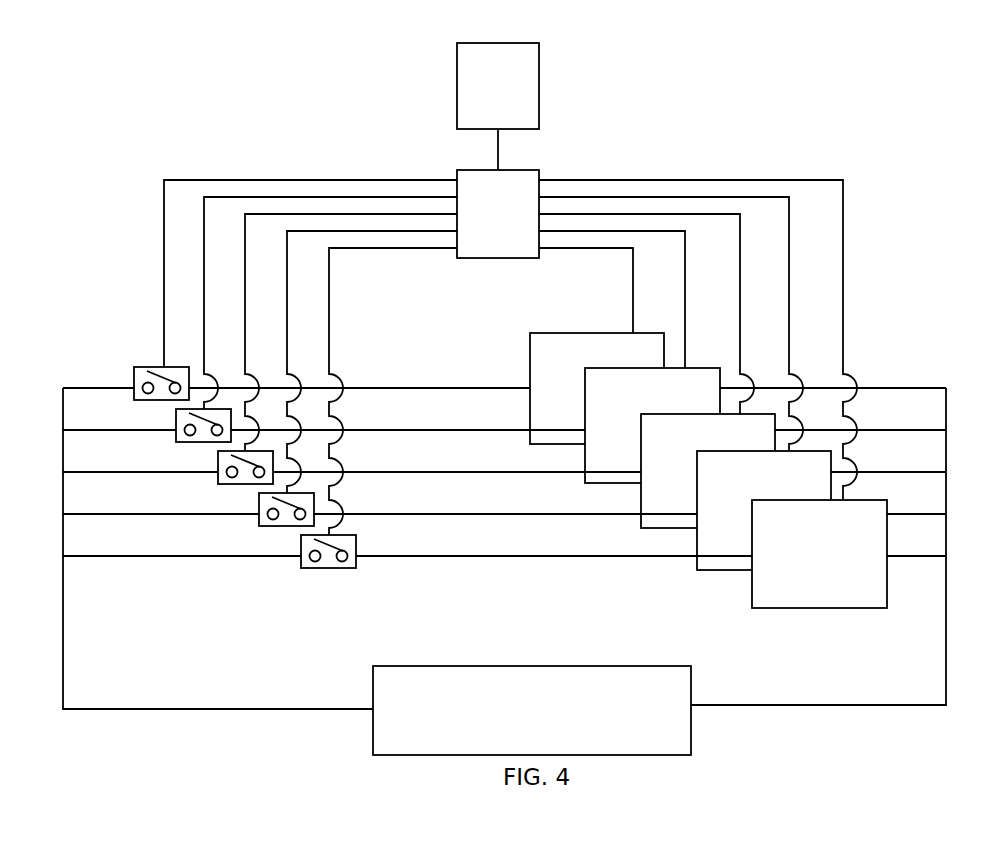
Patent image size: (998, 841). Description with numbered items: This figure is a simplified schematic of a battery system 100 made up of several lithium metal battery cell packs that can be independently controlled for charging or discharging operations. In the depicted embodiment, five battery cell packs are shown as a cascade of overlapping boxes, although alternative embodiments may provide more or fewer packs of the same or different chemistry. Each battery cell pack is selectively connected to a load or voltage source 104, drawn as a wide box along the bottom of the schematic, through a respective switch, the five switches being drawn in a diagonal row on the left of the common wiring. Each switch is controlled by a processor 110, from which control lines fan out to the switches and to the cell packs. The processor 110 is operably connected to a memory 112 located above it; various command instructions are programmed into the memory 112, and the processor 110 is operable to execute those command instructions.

The battery system 100 is at (885, 132).
The load or voltage source 104 is at (692, 693).
The processor 110 is at (540, 170).
The memory 112 is at (539, 62).